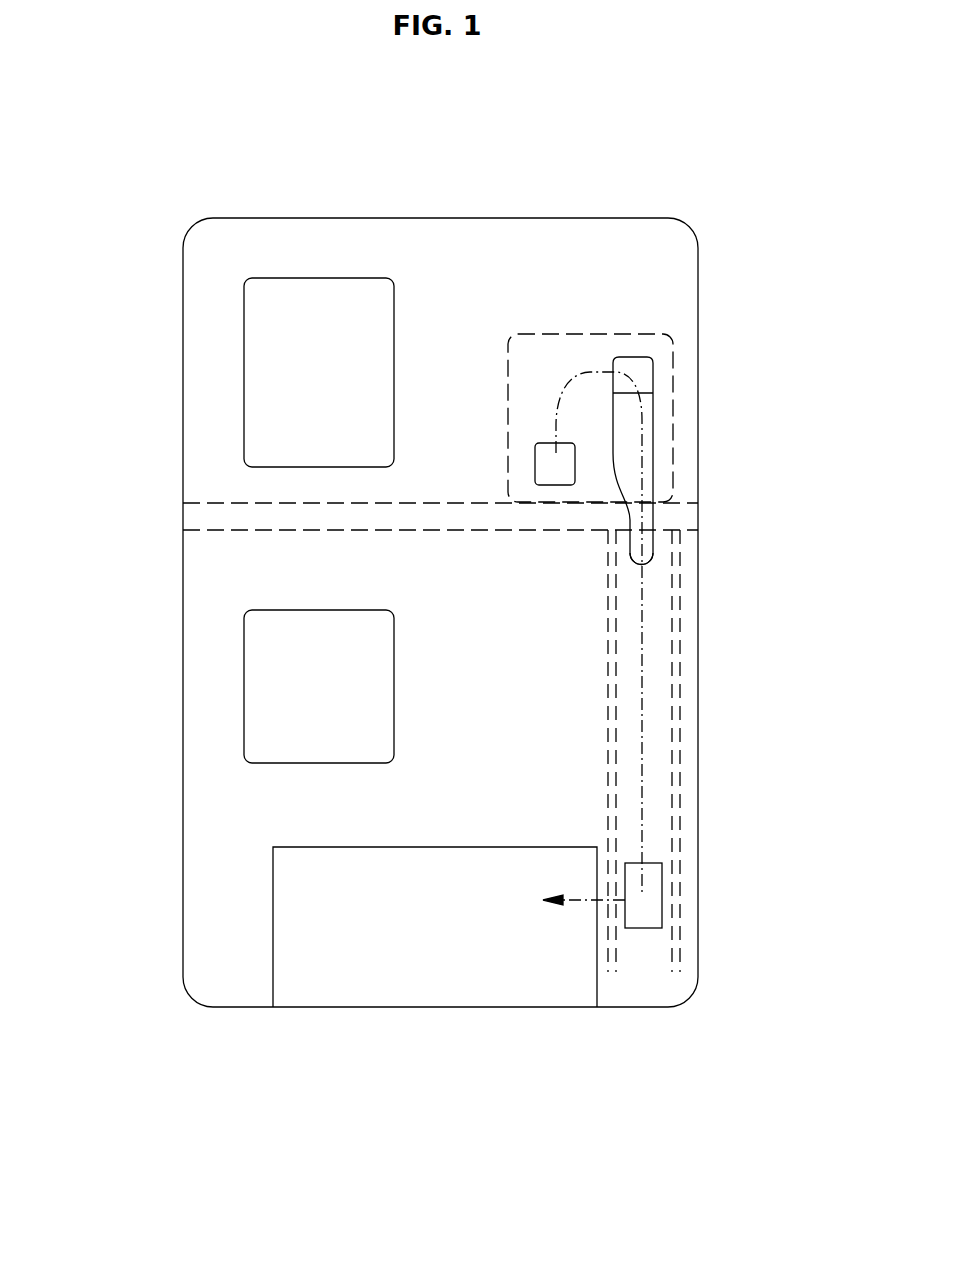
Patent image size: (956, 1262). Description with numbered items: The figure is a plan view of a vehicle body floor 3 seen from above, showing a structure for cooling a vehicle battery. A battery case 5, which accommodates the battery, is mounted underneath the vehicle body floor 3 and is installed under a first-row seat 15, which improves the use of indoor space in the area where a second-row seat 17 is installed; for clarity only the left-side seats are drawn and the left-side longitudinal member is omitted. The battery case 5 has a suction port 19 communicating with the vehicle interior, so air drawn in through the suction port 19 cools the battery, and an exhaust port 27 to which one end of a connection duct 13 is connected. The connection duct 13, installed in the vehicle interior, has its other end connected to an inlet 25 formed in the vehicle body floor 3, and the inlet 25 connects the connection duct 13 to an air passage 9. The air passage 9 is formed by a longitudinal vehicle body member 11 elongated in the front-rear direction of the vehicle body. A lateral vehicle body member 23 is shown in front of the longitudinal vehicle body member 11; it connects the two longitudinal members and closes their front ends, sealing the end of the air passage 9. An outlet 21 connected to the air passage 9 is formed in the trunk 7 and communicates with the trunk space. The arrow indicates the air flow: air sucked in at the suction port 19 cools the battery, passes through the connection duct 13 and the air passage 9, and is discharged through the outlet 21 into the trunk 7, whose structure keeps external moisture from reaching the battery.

The vehicle body floor 3 is at (425, 556).
The battery case 5 is at (590, 334).
The trunk 7 is at (424, 980).
The air passage 9 is at (660, 757).
The longitudinal vehicle body member 11 is at (673, 690).
The connection duct 13 is at (653, 445).
The first-row seat 15 is at (260, 330).
The second-row seat 17 is at (243, 693).
The suction port 19 is at (575, 483).
The outlet 21 is at (655, 902).
The lateral vehicle body member 23 is at (228, 503).
The inlet 25 is at (648, 553).
The exhaust port 27 is at (658, 418).